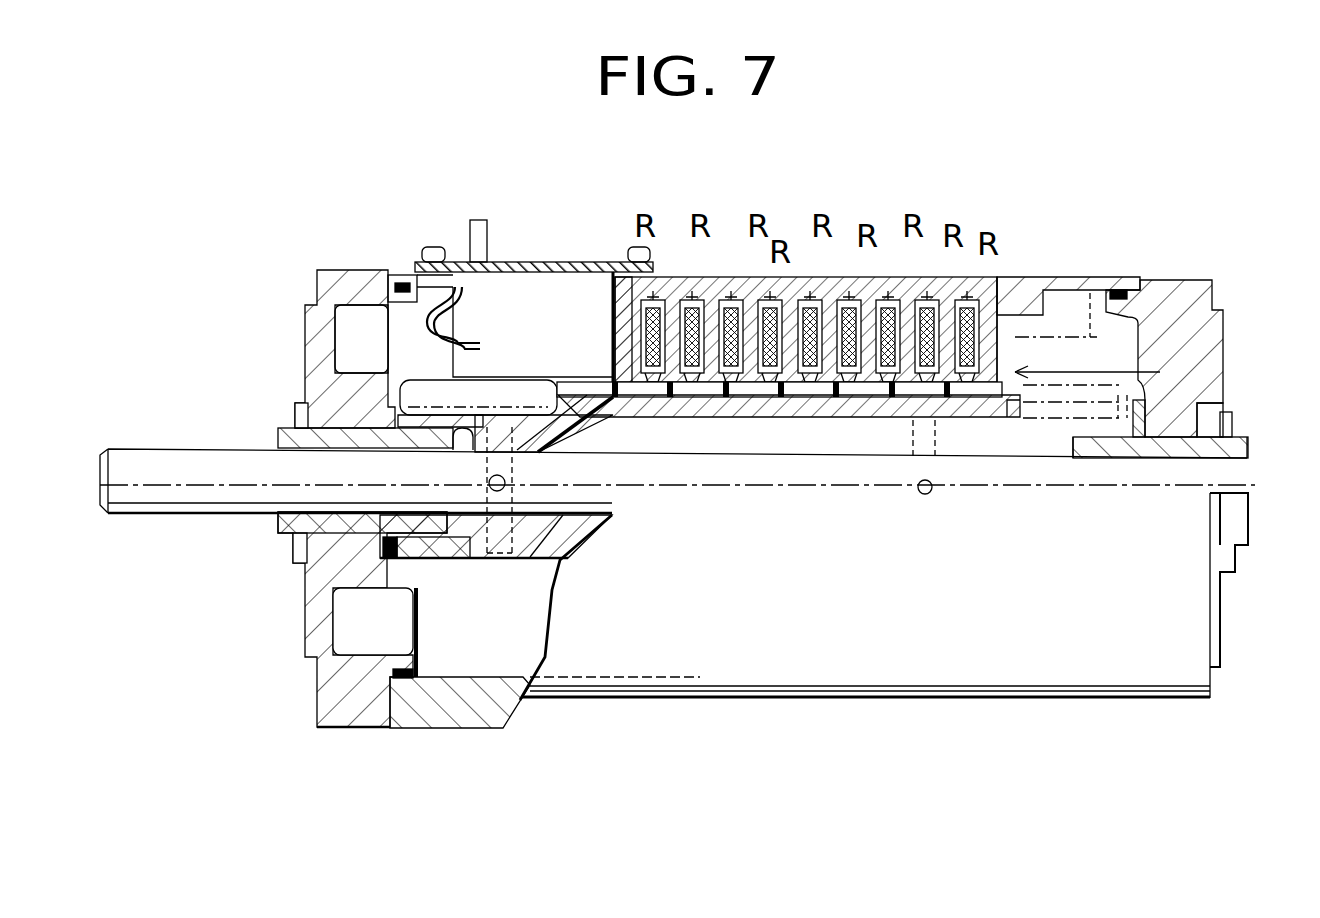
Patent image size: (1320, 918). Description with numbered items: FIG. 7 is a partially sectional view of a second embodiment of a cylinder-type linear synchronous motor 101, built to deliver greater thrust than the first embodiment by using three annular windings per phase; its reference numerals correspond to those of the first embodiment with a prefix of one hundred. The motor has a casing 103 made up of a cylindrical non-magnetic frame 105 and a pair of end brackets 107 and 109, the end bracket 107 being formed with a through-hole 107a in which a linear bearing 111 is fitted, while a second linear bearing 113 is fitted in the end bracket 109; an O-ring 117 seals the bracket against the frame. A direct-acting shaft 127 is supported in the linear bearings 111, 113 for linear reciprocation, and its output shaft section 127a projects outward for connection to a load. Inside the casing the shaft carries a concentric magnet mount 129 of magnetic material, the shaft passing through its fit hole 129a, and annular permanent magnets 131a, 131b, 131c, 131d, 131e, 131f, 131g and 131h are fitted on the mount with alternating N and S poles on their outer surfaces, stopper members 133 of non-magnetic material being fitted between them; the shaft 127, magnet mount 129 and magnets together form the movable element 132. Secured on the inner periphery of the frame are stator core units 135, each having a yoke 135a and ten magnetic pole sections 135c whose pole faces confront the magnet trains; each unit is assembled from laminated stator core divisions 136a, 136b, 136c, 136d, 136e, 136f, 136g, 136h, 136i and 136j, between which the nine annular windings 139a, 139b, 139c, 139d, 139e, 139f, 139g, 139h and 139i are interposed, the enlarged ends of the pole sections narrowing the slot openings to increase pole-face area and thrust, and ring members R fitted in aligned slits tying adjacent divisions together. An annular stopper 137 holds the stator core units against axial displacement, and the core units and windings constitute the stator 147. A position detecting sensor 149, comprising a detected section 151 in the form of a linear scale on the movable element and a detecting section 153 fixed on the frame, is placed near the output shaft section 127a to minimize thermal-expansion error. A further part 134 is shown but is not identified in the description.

The cylinder-type linear synchronous motor 101 is at (1238, 590).
The casing 103 is at (1170, 673).
The frame 105 is at (1093, 275).
The end bracket 107 is at (345, 280).
The through-hole 107a is at (345, 445).
The end bracket 109 is at (1195, 298).
The linear bearing 111 is at (290, 523).
The linear bearing 113 is at (1242, 454).
The O-ring 117 is at (403, 278).
The direct-acting shaft 127 is at (200, 515).
The output shaft section 127a is at (150, 500).
The magnet mount 129 is at (425, 680).
The fit hole 129a is at (440, 674).
The annular permanent magnet 131a is at (582, 560).
The annular permanent magnet 131b is at (640, 418).
The annular permanent magnet 131c is at (720, 418).
The annular permanent magnet 131d is at (770, 418).
The annular permanent magnet 131e is at (825, 418).
The annular permanent magnet 131f is at (880, 418).
The annular permanent magnet 131g is at (950, 418).
The annular permanent magnet 131h is at (1015, 418).
The movable element 132 is at (540, 690).
The stopper member 133 is at (655, 400).
The bolt 134 is at (348, 725).
The stator core unit 135 is at (485, 262).
The yoke 135a is at (790, 285).
The magnetic pole section 135c is at (603, 352).
The stator core division 136a is at (640, 298).
The stator core division 136b is at (690, 298).
The stator core division 136c is at (730, 298).
The stator core division 136d is at (770, 298).
The stator core division 136e is at (810, 298).
The stator core division 136f is at (850, 298).
The stator core division 136g is at (889, 298).
The stator core division 136h is at (928, 298).
The stator core division 136i is at (967, 298).
The stator core division 136j is at (995, 292).
The annular stopper 137 is at (1180, 330).
The annular winding 139a is at (605, 398).
The annular winding 139b is at (690, 398).
The annular winding 139c is at (745, 398).
The annular winding 139d is at (800, 398).
The annular winding 139e is at (855, 398).
The annular winding 139f is at (905, 398).
The annular winding 139g is at (935, 398).
The annular winding 139h is at (985, 398).
The annular winding 139i is at (1000, 398).
The stator 147 is at (1212, 408).
The position detecting sensor 149 is at (198, 315).
The detected section 151 is at (430, 396).
The detecting section 153 is at (470, 343).